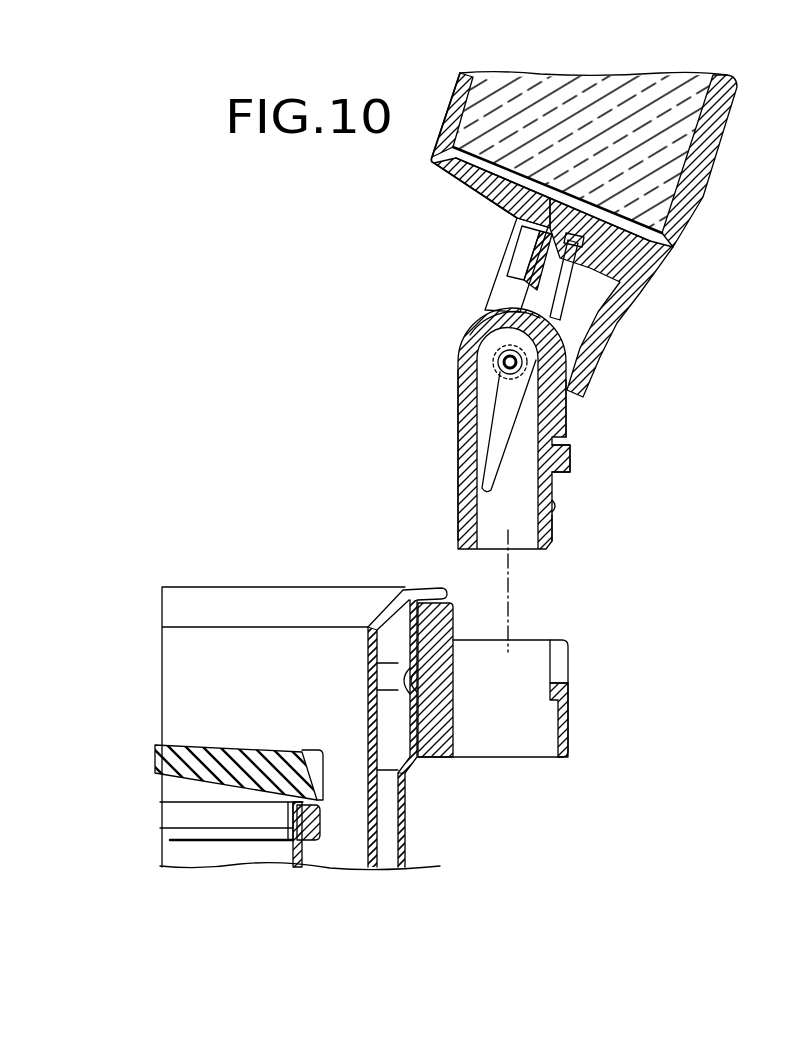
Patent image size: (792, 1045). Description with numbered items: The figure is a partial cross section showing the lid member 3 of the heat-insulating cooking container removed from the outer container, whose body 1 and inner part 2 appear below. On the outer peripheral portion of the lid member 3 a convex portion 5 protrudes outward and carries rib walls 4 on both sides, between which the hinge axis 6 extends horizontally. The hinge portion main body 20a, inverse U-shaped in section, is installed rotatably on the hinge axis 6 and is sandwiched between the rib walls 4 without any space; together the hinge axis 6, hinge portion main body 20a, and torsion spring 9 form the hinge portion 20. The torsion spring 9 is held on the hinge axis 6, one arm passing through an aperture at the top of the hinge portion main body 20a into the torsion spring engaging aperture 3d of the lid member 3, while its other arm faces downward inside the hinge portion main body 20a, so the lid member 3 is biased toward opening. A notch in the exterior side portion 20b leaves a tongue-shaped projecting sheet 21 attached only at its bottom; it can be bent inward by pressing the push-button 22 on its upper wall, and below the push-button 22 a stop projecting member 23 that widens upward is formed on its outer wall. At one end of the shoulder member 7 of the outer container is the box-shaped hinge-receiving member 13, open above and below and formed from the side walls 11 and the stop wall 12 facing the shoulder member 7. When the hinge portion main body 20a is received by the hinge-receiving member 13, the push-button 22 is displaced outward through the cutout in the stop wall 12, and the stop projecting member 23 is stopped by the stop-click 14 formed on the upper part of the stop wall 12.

The container 1 is at (411, 855).
The plug 2 is at (332, 818).
The lid member 3 is at (584, 181).
The torsion spring engaging aperture 3d is at (549, 255).
The rib walls 4 is at (502, 298).
The convex portion 5 is at (623, 333).
The hinge axis 6 is at (470, 342).
The shoulder member 7 is at (438, 742).
The torsion spring 9 is at (490, 365).
The side walls 11 is at (528, 742).
The stop wall 12 is at (570, 723).
The hinge-receiving member 13 is at (520, 692).
The stop-click 14 is at (551, 696).
The hinge portion 20 is at (529, 434).
The hinge portion main body 20a is at (456, 414).
The exterior side portion 20b is at (570, 422).
The projecting sheet 21 is at (557, 487).
The push-button 22 is at (570, 458).
The stop projecting member 23 is at (560, 500).